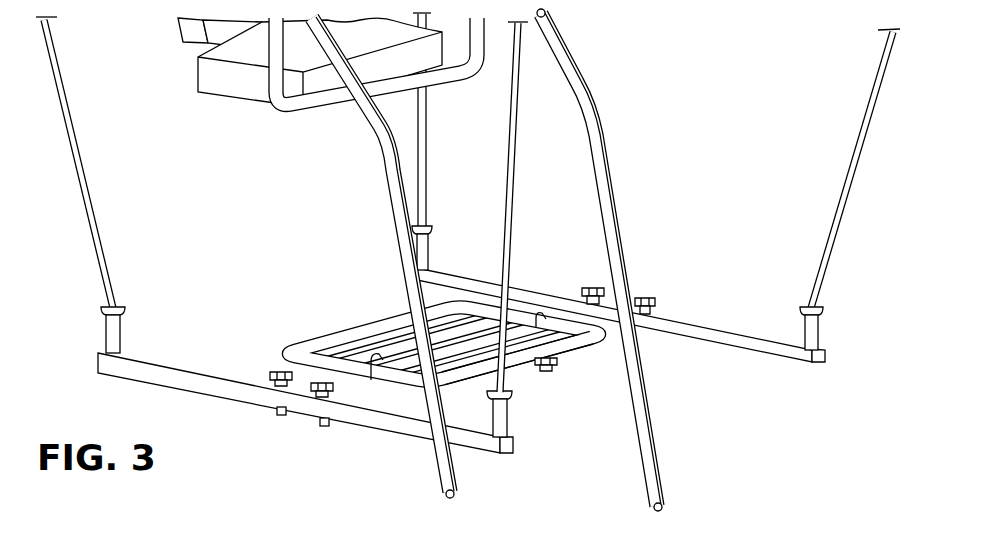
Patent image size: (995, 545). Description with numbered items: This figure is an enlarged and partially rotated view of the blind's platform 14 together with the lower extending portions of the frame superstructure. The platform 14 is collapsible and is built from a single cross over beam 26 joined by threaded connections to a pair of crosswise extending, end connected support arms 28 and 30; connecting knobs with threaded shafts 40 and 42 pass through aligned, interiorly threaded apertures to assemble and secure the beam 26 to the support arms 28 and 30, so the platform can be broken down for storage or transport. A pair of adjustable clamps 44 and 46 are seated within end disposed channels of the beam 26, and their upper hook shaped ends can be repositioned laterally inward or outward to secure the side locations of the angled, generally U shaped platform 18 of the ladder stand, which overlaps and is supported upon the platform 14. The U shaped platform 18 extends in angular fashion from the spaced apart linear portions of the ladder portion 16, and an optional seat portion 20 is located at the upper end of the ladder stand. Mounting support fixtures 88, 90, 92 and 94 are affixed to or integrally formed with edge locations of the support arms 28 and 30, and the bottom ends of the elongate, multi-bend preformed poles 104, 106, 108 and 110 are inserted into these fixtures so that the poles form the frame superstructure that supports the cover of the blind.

The platform 14 is at (318, 441).
The ladder portion 16 is at (430, 452).
The U shaped platform 18 is at (307, 338).
The seat portion 20 is at (232, 80).
The cross over beam 26 is at (562, 348).
The support arm 28 is at (178, 368).
The support arm 30 is at (553, 293).
The connecting knob with threaded shaft 40 is at (318, 401).
The connecting knob with threaded shaft 42 is at (648, 297).
The adjustable clamp 44 is at (378, 353).
The adjustable clamp 46 is at (535, 313).
The mounting support fixture 88 is at (508, 413).
The mounting support fixture 90 is at (108, 337).
The mounting support fixture 92 is at (818, 335).
The mounting support fixture 94 is at (430, 252).
The pole 104 is at (504, 252).
The pole 106 is at (92, 200).
The pole 108 is at (430, 172).
The pole 110 is at (834, 208).